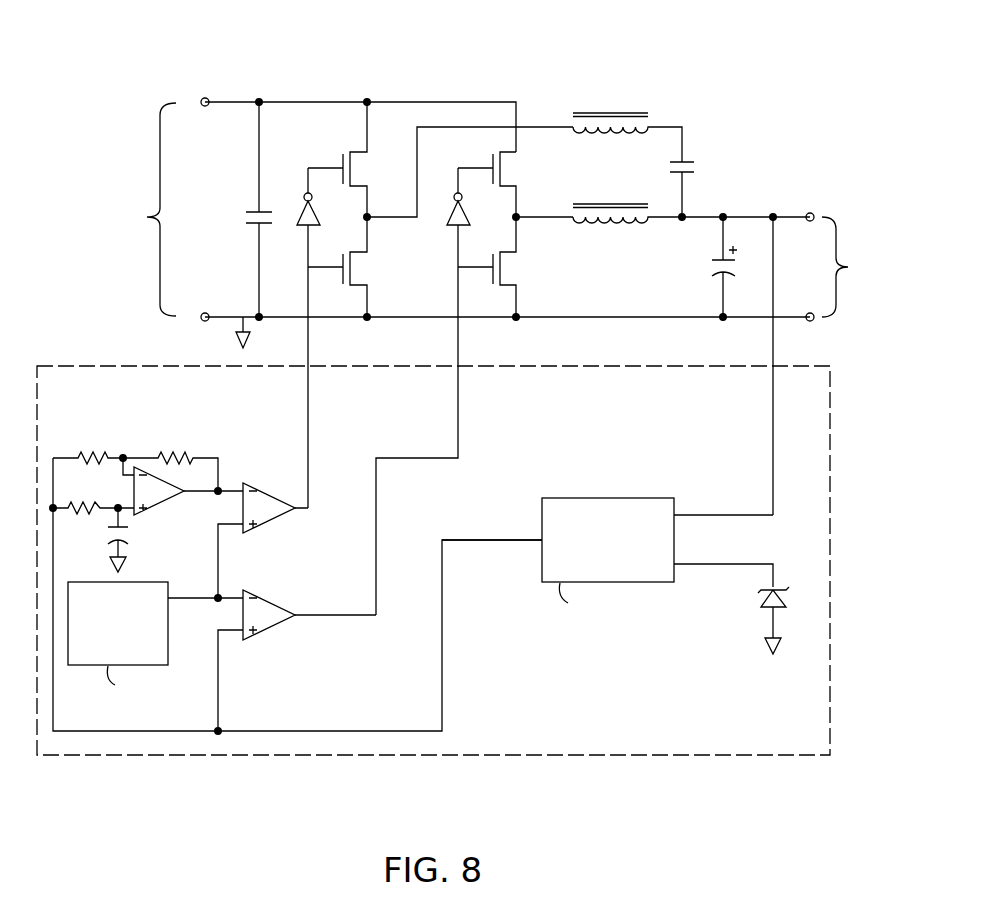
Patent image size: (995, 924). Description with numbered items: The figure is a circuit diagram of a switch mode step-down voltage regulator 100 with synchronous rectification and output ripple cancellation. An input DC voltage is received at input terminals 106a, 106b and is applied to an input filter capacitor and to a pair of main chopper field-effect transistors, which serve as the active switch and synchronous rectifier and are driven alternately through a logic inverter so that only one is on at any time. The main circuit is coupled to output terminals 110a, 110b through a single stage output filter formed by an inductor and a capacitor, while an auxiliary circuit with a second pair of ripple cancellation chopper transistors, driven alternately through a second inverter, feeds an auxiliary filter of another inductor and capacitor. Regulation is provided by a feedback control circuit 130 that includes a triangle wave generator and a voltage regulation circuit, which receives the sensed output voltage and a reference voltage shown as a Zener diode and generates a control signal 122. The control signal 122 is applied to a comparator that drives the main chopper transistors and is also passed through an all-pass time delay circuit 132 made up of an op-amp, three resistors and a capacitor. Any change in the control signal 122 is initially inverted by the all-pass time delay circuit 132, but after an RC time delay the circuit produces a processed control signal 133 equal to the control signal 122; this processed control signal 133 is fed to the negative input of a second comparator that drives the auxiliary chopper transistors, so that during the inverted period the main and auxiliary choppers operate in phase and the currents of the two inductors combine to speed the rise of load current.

The switch mode step-down voltage regulator 100 is at (182, 36).
The input terminal 106a is at (203, 96).
The input terminal 106b is at (203, 323).
The output terminal 110a is at (815, 212).
The output terminal 110b is at (815, 322).
The control signal 122 is at (476, 540).
The feedback control circuit 130 is at (832, 497).
The all-pass time delay circuit 132 is at (103, 394).
The processed control signal 133 is at (232, 491).